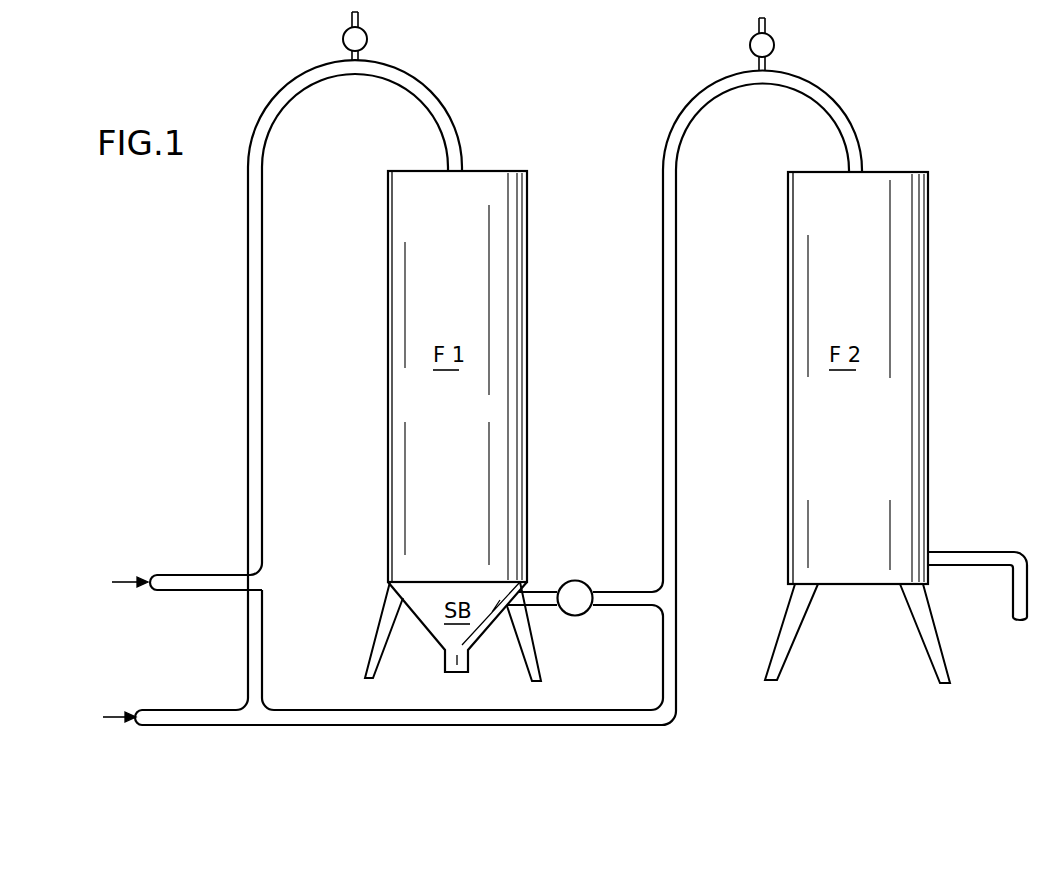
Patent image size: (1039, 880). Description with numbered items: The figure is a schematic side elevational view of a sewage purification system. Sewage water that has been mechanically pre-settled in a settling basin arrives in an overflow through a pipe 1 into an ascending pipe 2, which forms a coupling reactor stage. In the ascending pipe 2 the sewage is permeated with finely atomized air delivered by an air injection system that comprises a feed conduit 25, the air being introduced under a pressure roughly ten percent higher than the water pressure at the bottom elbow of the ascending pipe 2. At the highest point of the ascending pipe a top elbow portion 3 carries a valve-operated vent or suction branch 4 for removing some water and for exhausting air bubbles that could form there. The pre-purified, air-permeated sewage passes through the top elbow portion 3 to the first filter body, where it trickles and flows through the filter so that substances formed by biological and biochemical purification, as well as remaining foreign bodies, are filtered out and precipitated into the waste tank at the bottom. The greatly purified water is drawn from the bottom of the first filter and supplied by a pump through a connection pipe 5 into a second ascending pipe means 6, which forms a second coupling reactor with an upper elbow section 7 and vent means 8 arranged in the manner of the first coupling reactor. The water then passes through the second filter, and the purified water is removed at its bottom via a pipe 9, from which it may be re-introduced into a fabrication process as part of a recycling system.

The pipe 1 is at (201, 581).
The ascending pipe 2 is at (247, 330).
The top elbow portion 3 is at (290, 82).
The valve-operated vent or suction branch 4 is at (368, 39).
The connection pipe 5 is at (541, 592).
The second ascending pipe means 6 is at (662, 330).
The upper elbow section 7 is at (709, 84).
The vent means 8 is at (775, 43).
The pipe 9 is at (970, 566).
The feed conduit 25 is at (342, 693).